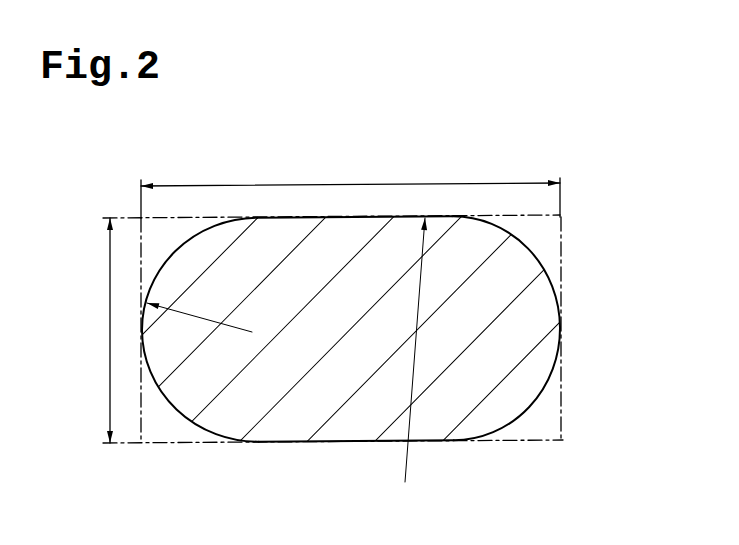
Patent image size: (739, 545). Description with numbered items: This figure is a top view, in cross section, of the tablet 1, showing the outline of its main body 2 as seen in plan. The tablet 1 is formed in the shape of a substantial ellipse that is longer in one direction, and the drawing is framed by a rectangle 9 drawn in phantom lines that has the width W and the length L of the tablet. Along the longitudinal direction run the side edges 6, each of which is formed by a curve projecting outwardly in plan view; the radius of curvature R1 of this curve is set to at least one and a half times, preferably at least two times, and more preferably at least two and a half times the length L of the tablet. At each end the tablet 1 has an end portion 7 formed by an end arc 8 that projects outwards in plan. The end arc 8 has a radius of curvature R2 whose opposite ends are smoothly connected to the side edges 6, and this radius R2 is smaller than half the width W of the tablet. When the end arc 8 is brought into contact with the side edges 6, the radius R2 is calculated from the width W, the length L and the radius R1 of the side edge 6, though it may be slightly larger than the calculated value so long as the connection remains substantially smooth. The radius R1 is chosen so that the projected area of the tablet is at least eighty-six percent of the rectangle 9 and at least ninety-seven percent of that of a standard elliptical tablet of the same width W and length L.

The tablet 1 is at (346, 322).
The main body 2 is at (288, 423).
The side edge 6 is at (350, 443).
The end portion 7 is at (540, 368).
The end arc 8 is at (553, 282).
The rectangle 9 is at (553, 426).
The length of the tablet L is at (300, 185).
The width of the tablet W is at (112, 315).
The radius of curvature of the side edge R1 is at (412, 423).
The radius of curvature of the end arc R2 is at (240, 325).